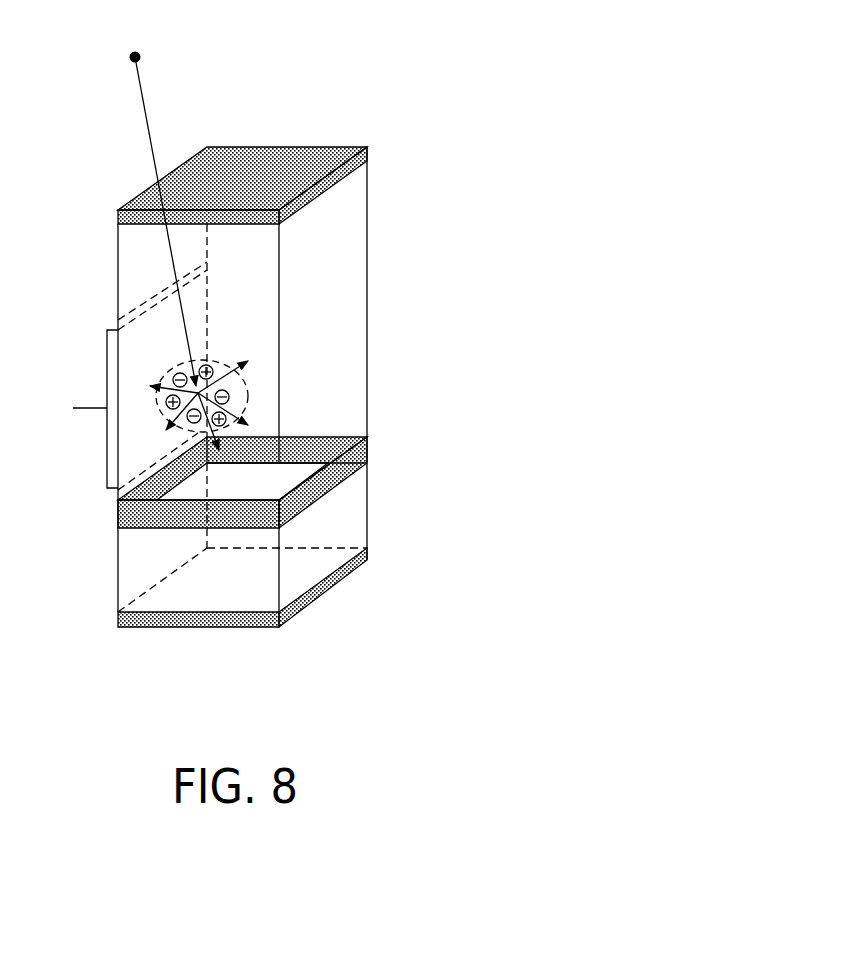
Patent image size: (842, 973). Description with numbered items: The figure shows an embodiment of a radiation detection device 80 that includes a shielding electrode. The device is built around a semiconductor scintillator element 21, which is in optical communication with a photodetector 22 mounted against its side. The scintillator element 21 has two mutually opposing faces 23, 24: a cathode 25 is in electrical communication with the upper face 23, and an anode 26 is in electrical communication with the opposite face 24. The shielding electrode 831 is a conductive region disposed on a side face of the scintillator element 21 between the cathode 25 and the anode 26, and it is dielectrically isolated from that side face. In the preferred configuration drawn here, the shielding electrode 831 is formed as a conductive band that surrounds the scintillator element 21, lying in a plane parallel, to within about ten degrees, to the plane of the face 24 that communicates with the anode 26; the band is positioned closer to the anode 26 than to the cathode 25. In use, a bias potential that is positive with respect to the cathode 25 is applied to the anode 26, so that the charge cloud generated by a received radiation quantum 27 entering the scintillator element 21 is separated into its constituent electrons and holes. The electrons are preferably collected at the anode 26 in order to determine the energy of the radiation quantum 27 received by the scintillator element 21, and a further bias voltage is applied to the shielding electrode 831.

The radiation detection device 80 is at (432, 72).
The semiconductor scintillator element 21 is at (127, 282).
The photodetector 22 is at (111, 352).
The scintillator element face 23 is at (357, 158).
The scintillator element face 24 is at (137, 606).
The cathode 25 is at (277, 153).
The anode 26 is at (208, 627).
The radiation quantum 27 is at (130, 57).
The shielding electrode 831 is at (367, 459).